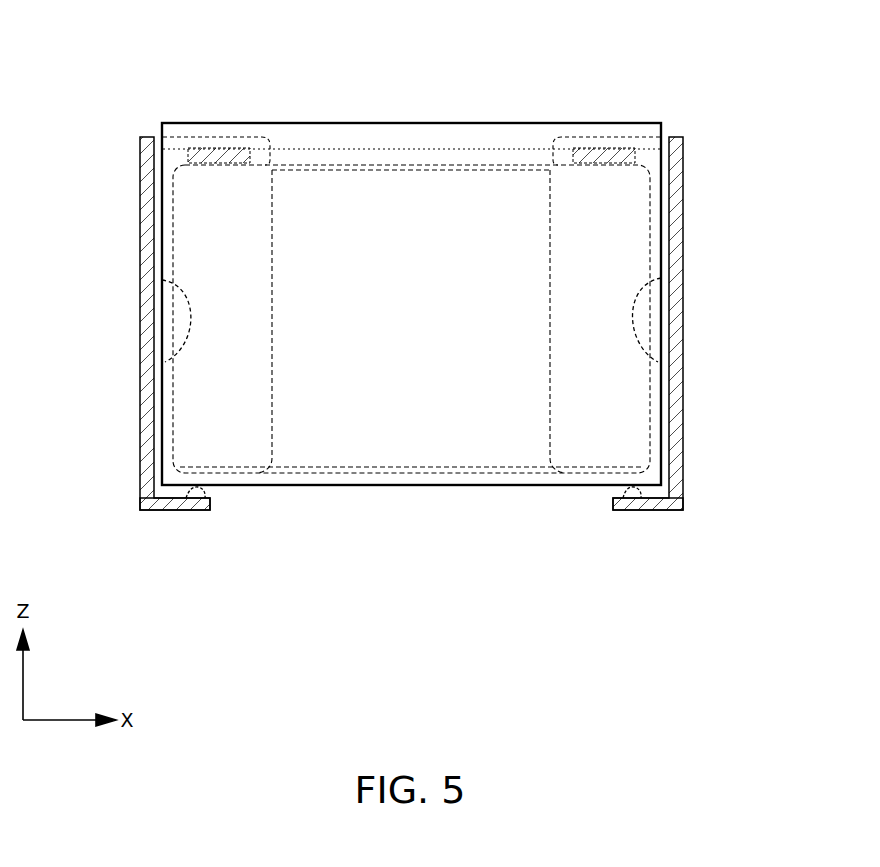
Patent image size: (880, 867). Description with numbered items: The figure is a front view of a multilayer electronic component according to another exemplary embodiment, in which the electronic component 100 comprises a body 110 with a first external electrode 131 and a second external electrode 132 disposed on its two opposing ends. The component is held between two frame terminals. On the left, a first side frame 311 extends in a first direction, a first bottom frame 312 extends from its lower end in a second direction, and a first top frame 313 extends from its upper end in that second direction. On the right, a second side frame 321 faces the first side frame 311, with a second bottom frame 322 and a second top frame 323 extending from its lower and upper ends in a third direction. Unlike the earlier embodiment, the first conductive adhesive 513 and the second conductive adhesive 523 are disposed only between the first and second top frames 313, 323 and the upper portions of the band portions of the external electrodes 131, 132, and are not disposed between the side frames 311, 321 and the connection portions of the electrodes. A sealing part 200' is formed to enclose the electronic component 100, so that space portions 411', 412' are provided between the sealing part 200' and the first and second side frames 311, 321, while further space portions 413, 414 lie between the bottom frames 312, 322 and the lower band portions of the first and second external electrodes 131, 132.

The electronic component 100 is at (443, 448).
The body 110 is at (355, 452).
The first external electrode 131 is at (240, 464).
The second external electrode 132 is at (598, 467).
The sealing part 200' is at (411, 260).
The first side frame 311 is at (150, 327).
The first bottom frame 312 is at (180, 510).
The first top frame 313 is at (183, 142).
The second side frame 321 is at (672, 305).
The second bottom frame 322 is at (655, 505).
The second top frame 323 is at (630, 135).
The space portion 411' is at (114, 301).
The space portion 412' is at (713, 301).
The space portion 413 is at (200, 510).
The space portion 414 is at (637, 510).
The first conductive adhesive 513 is at (230, 145).
The second conductive adhesive 523 is at (582, 140).